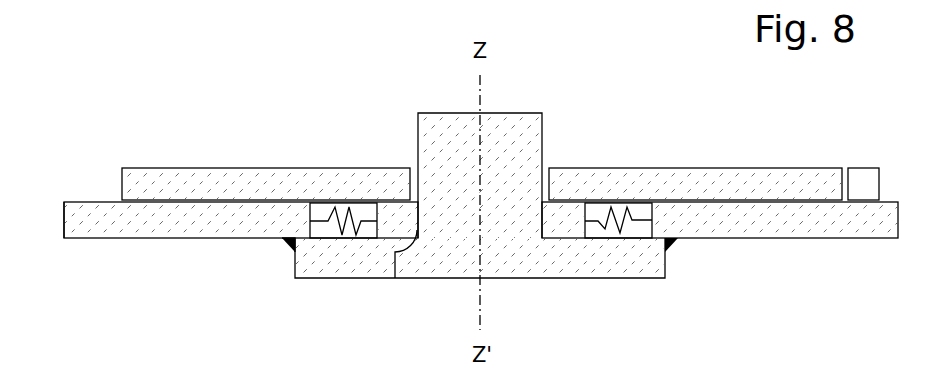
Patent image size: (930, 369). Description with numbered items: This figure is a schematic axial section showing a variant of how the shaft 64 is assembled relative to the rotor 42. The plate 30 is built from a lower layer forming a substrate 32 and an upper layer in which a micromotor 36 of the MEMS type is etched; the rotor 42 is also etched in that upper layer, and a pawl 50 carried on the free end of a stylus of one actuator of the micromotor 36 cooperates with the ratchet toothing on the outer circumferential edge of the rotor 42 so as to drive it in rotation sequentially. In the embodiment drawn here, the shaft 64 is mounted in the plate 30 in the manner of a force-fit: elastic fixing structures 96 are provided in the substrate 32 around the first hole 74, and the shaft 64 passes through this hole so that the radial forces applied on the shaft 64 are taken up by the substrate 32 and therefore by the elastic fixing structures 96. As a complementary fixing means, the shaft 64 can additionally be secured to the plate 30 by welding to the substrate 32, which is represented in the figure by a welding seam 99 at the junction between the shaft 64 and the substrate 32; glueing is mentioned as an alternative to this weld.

The plate 30 is at (63, 222).
The substrate 32 is at (142, 232).
The micromotor 36 is at (361, 96).
The rotor 42 is at (211, 166).
The pawl 50 is at (864, 166).
The shaft 64 is at (450, 110).
The first hole 74 is at (396, 280).
The elastic fixing structures 96 is at (340, 240).
The welding seam 99 is at (291, 241).